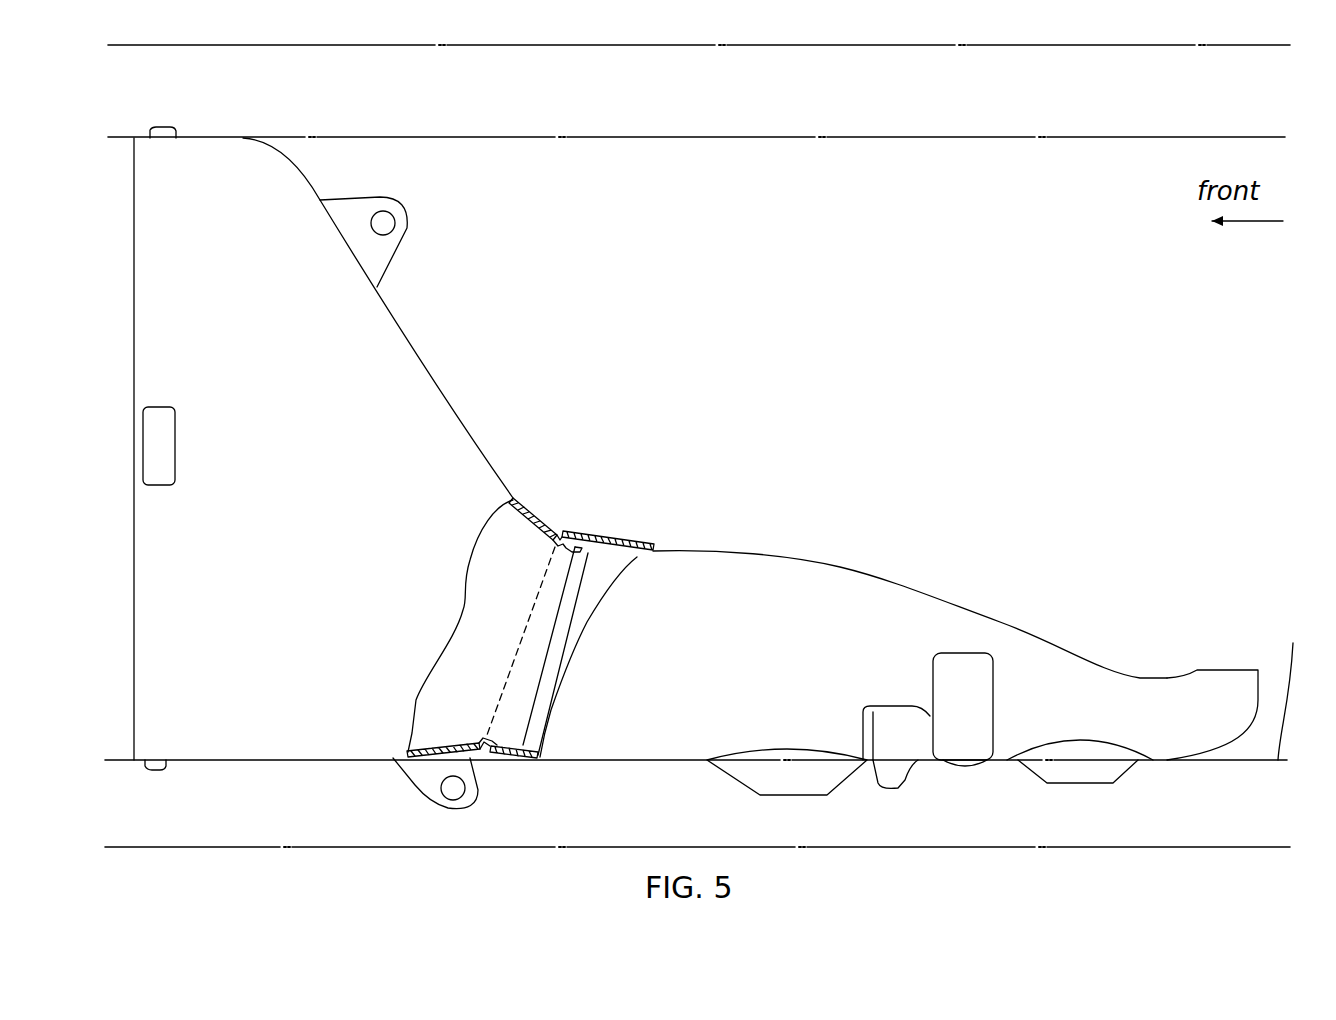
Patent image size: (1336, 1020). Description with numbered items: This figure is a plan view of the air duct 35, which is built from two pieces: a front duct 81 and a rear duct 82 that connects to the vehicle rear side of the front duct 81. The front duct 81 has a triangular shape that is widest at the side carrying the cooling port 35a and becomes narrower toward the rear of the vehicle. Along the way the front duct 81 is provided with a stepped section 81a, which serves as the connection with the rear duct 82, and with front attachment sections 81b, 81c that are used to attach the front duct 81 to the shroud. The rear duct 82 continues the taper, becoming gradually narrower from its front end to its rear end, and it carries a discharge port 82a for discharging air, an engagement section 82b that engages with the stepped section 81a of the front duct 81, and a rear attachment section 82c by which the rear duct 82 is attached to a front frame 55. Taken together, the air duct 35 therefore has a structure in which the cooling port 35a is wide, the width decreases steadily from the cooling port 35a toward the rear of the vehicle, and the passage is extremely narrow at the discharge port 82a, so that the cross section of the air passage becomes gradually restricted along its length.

The air duct 35 is at (685, 415).
The cooling port 35a is at (133, 405).
The front frame 55 is at (1293, 643).
The front duct 81 is at (455, 397).
The stepped section 81a is at (490, 737).
The front attachment section 81b is at (410, 218).
The front attachment section 81c is at (423, 790).
The rear duct 82 is at (900, 572).
The discharge port 82a is at (1220, 670).
The engagement section 82b is at (575, 530).
The rear attachment section 82c is at (968, 766).